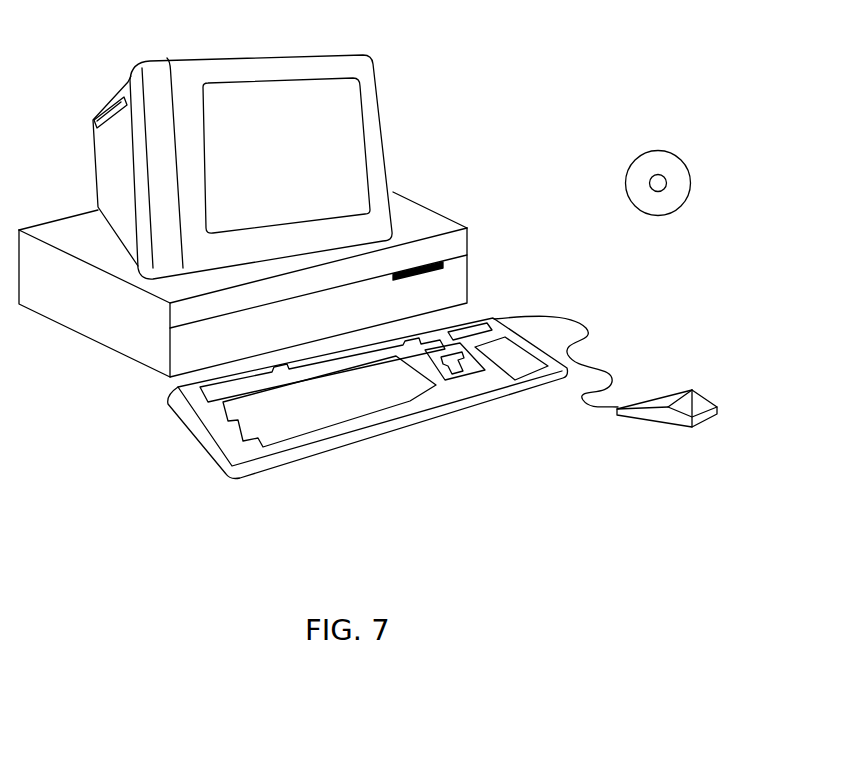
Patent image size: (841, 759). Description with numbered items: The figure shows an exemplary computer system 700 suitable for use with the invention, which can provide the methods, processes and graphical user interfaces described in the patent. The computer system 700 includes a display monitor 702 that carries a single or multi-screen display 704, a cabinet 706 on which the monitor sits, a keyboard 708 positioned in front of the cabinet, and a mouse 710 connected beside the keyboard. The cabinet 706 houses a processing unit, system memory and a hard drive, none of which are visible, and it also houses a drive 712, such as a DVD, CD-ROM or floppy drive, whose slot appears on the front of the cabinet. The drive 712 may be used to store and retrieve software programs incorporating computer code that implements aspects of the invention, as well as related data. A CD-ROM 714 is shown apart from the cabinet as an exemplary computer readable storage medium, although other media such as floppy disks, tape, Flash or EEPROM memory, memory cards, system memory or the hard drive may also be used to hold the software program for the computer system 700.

The computer system 700 is at (578, 54).
The display monitor 702 is at (388, 157).
The display 704 is at (347, 118).
The cabinet 706 is at (128, 362).
The keyboard 708 is at (380, 436).
The mouse 710 is at (707, 397).
The drive 712 is at (443, 262).
The CD-ROM 714 is at (675, 153).